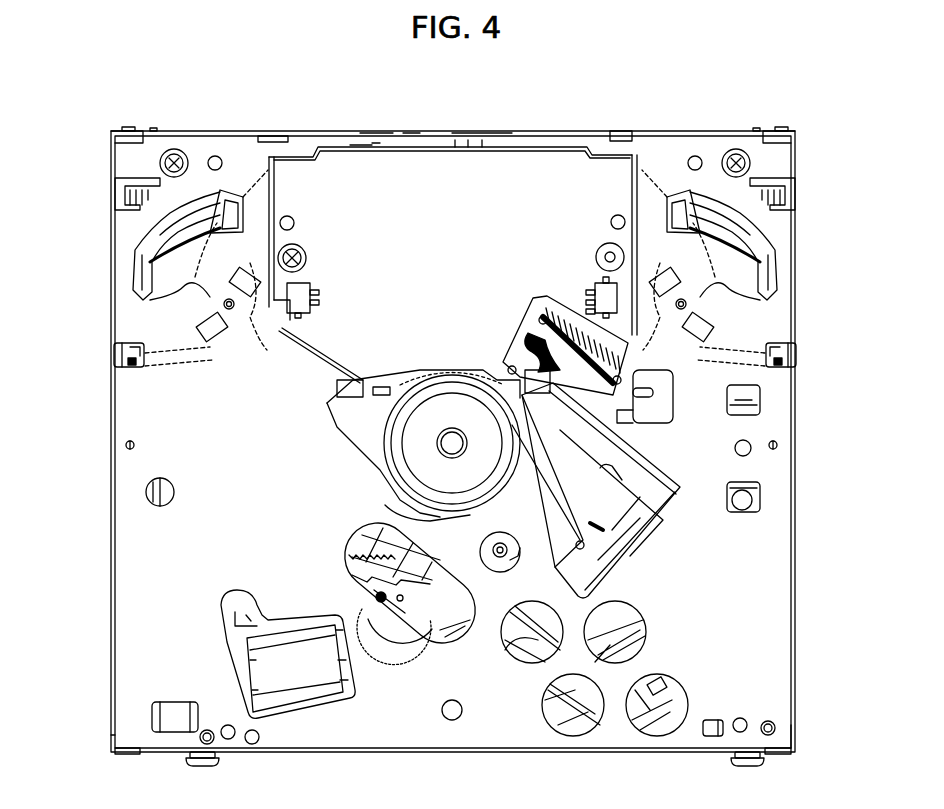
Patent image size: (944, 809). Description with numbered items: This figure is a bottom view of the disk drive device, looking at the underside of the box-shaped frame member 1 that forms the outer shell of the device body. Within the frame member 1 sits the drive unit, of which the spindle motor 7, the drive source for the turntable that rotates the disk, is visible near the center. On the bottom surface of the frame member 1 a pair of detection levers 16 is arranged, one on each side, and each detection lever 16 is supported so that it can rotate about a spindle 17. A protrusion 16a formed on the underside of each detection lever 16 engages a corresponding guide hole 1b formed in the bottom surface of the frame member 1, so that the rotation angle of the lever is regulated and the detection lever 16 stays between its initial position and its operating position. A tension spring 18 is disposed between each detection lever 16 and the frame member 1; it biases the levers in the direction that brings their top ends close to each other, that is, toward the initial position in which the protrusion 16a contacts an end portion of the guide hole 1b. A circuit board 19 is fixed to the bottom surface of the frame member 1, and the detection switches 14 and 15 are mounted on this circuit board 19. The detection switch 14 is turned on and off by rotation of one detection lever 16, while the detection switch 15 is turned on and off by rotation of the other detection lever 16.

The frame member 1 is at (790, 130).
The guide hole 1b is at (170, 303).
The spindle motor 7 is at (423, 473).
The detection switch 14 is at (300, 293).
The detection switch 15 is at (603, 295).
The detection lever 16 is at (200, 270).
The protrusion 16a is at (228, 212).
The spindle 17 is at (217, 303).
The tension spring 18 is at (180, 363).
The circuit board 19 is at (410, 160).